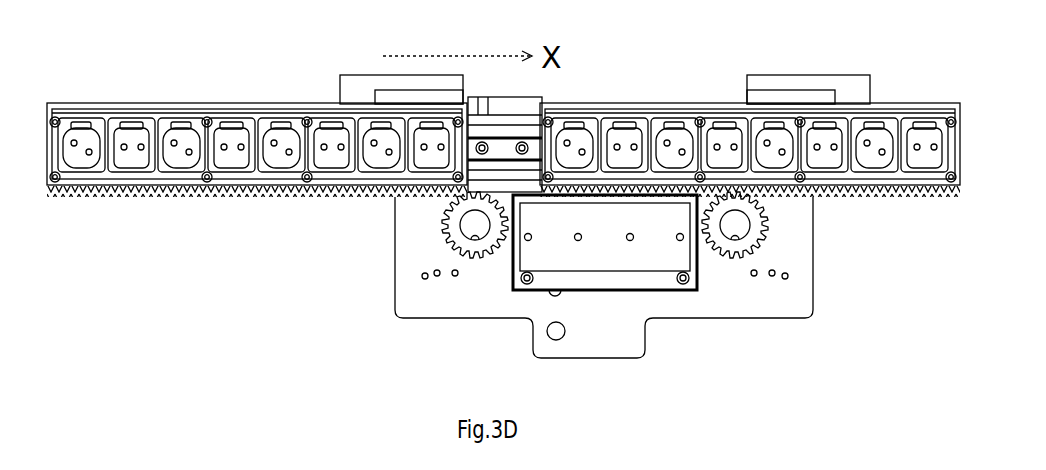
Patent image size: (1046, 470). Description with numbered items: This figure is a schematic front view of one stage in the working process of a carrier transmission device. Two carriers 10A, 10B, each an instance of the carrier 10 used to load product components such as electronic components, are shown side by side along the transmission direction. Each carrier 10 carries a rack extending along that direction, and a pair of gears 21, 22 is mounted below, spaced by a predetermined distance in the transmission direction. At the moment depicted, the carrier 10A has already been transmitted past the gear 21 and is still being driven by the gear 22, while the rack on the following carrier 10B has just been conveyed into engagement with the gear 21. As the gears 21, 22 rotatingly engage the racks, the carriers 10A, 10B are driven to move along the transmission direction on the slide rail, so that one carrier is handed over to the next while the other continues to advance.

The carrier 10 is at (503, 115).
The carrier 10A is at (684, 118).
The carrier 10B is at (226, 113).
The gear 21 is at (477, 247).
The gear 22 is at (730, 245).